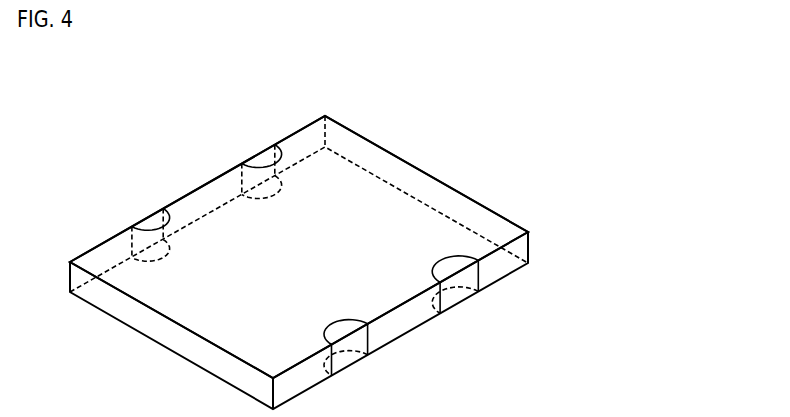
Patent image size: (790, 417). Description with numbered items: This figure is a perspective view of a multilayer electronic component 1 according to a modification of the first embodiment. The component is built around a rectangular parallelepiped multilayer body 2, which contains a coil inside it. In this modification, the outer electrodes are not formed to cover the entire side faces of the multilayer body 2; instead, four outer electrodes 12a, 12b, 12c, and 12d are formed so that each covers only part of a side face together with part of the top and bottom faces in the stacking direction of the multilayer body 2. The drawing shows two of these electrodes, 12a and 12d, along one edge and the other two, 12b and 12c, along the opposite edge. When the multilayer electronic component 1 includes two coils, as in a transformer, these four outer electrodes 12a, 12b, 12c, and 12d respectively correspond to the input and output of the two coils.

The multilayer electronic component 1 is at (84, 71).
The multilayer body 2 is at (320, 103).
The outer electrode 12a is at (157, 221).
The outer electrode 12b is at (455, 297).
The outer electrode 12c is at (348, 367).
The outer electrode 12d is at (268, 151).